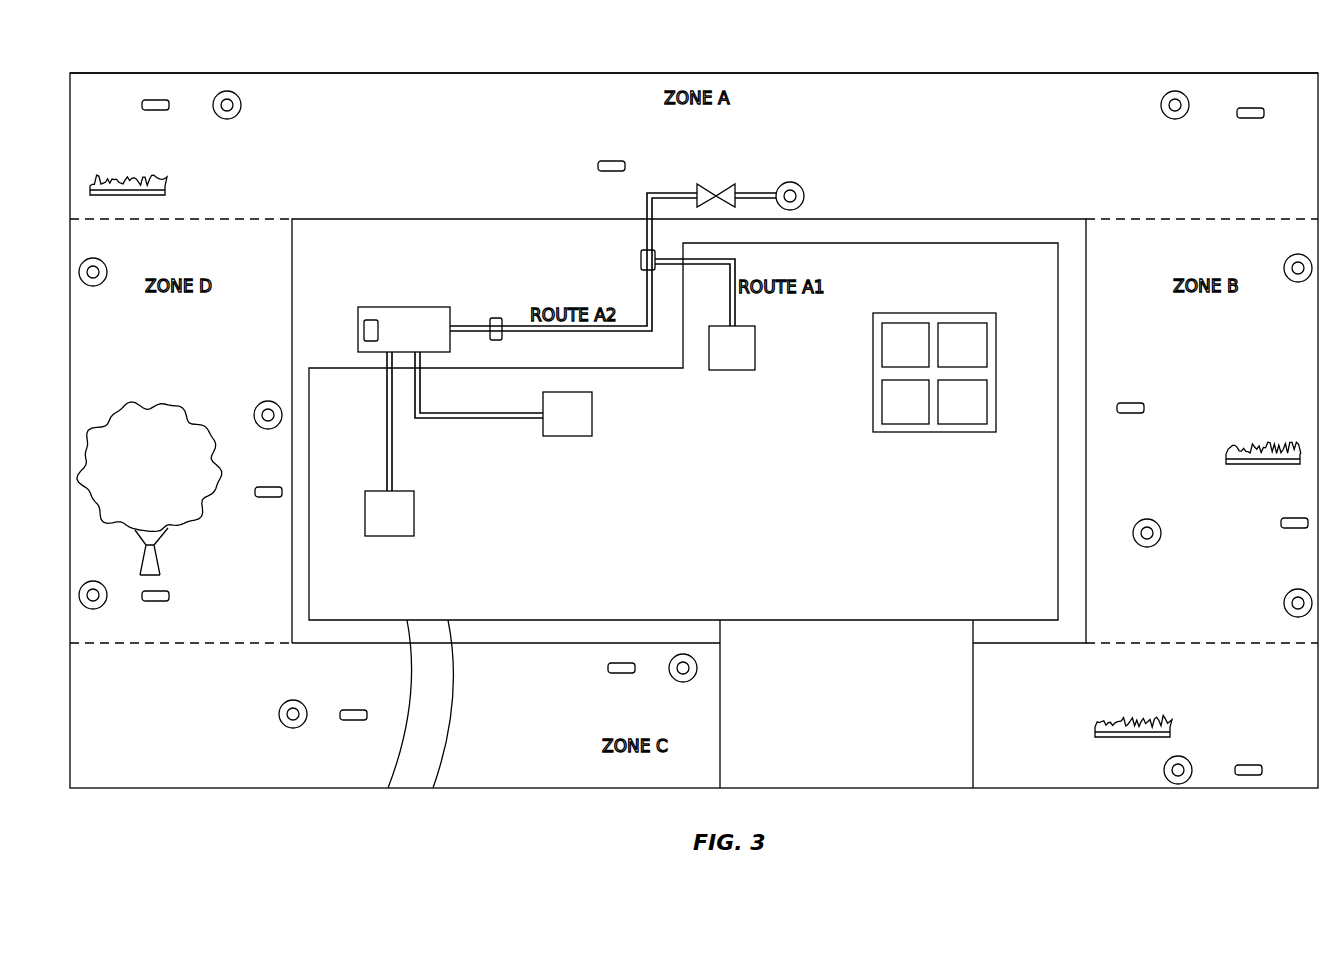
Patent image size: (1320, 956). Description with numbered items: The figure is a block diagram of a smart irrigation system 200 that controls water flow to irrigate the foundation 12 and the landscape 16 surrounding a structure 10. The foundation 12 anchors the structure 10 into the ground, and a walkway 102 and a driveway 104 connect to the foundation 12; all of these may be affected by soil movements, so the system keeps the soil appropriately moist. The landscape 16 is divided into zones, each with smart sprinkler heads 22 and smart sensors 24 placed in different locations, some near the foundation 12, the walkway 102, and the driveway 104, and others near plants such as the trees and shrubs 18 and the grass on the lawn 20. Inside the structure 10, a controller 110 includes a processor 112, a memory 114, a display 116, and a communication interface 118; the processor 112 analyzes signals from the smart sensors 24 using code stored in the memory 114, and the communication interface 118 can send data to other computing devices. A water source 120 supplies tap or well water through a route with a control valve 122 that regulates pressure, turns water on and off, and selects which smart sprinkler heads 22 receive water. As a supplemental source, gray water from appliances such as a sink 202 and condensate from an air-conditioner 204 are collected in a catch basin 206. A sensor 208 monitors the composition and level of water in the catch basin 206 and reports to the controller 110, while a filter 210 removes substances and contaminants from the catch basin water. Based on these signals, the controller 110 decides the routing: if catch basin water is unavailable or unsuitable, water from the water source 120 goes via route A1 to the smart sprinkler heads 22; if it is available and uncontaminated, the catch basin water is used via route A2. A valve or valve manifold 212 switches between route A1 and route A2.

The smart irrigation system 200 is at (1215, 50).
The landscape 16 is at (700, 73).
The foundation 12 is at (525, 218).
The structure 10 is at (920, 243).
The trees and shrubs 18 is at (165, 405).
The grass on the lawn 20 is at (135, 185).
The smart sprinkler heads 22 is at (241, 100).
The smart sensors 24 is at (155, 110).
The walkway 102 is at (455, 690).
The driveway 104 is at (973, 700).
The controller 110 is at (934, 360).
The processor 112 is at (905, 345).
The memory 114 is at (962, 345).
The display 116 is at (905, 402).
The communication interface 118 is at (962, 402).
The water source 120 is at (732, 348).
The control valve 122 is at (732, 185).
The sink 202 is at (389, 513).
The air-conditioner 204 is at (567, 414).
The catch basin 206 is at (404, 329).
The sensor 208 is at (364, 322).
The filter 210 is at (500, 341).
The valve or valve manifold 212 is at (641, 257).